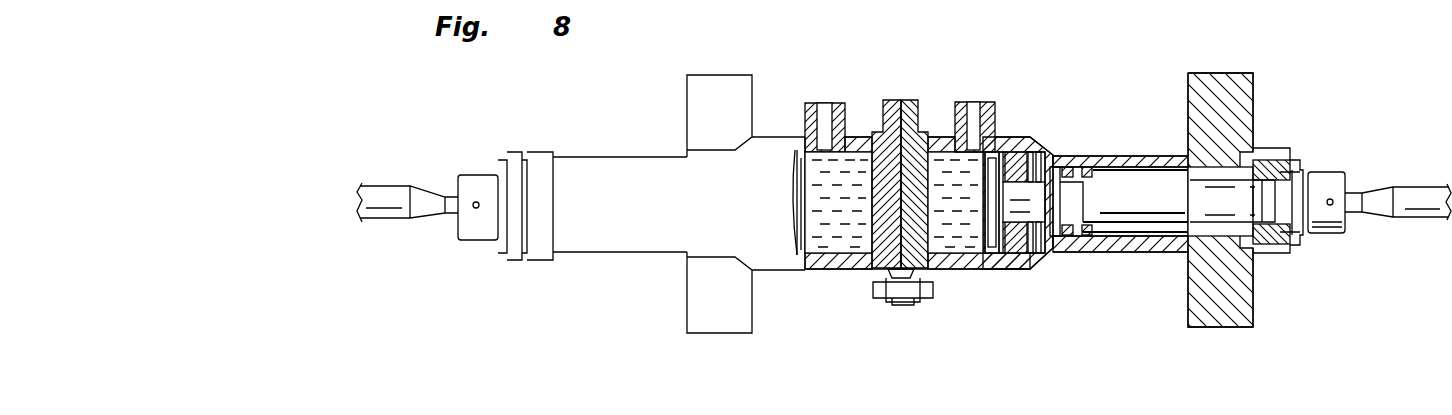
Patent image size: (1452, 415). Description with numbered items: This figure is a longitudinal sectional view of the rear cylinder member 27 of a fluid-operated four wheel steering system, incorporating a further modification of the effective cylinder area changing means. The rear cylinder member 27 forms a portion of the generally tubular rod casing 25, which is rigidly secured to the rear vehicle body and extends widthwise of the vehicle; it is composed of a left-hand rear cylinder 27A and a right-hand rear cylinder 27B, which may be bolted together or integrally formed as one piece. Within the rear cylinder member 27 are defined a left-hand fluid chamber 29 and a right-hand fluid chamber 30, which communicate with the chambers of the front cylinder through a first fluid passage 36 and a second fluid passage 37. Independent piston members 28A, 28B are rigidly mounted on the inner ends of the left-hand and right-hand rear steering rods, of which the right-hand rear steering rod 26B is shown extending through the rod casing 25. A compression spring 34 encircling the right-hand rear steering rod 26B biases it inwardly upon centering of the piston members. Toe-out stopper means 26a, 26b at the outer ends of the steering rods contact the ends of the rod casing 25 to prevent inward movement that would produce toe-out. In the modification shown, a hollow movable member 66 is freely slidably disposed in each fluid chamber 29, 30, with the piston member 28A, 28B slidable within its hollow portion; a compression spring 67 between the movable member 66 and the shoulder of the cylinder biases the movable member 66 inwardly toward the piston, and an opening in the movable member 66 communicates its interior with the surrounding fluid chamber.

The toe-out stopper means 26a is at (479, 243).
The toe-out stopper means 26b is at (1328, 228).
The right-hand rear steering rod 26B is at (1120, 251).
The rear cylinder member 27 is at (916, 148).
The left-hand rear cylinder 27A is at (870, 122).
The right-hand rear cylinder 27B is at (940, 122).
The piston member 28A is at (790, 245).
The piston member 28B is at (1012, 257).
The left-hand fluid chamber 29 is at (842, 243).
The right-hand fluid chamber 30 is at (962, 243).
The compression spring 34 is at (1068, 250).
The first fluid passage 36 is at (980, 102).
The second fluid passage 37 is at (830, 100).
The rod casing 25 is at (1002, 150).
The movable member 66 is at (797, 250).
The compression spring 67 is at (1044, 158).